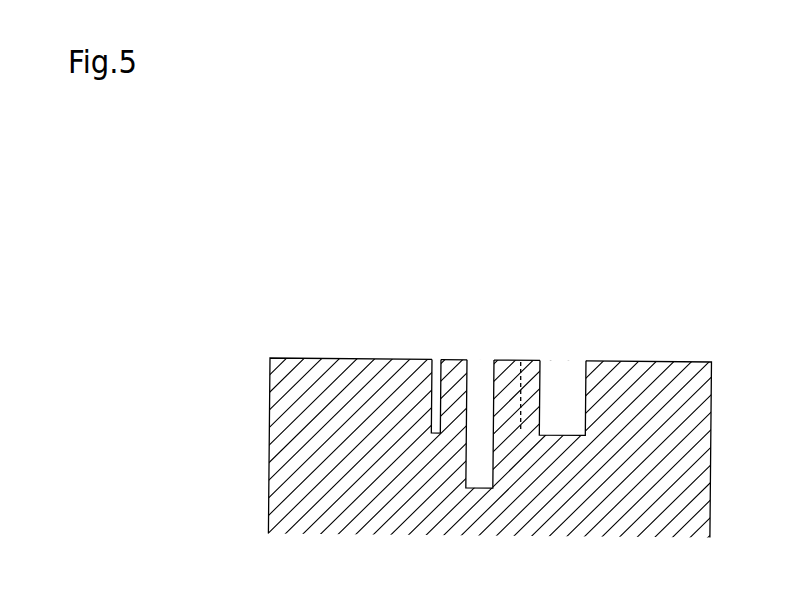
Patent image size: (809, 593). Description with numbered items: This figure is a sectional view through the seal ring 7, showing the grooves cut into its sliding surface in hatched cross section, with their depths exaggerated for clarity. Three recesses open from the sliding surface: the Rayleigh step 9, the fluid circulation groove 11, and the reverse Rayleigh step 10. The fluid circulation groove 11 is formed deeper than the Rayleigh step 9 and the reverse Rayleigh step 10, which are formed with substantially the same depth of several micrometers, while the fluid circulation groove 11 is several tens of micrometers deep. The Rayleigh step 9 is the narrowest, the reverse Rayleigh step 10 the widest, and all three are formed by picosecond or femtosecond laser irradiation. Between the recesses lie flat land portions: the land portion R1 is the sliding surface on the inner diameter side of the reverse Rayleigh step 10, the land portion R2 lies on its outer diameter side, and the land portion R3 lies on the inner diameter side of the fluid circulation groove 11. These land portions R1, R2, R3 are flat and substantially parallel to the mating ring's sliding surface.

The seal ring 7 is at (699, 297).
The Rayleigh step 9 is at (442, 380).
The reverse Rayleigh step 10 is at (586, 387).
The fluid circulation groove 11 is at (474, 393).
The land portion R1 is at (516, 360).
The land portion R2 is at (662, 362).
The land portion R3 is at (362, 358).